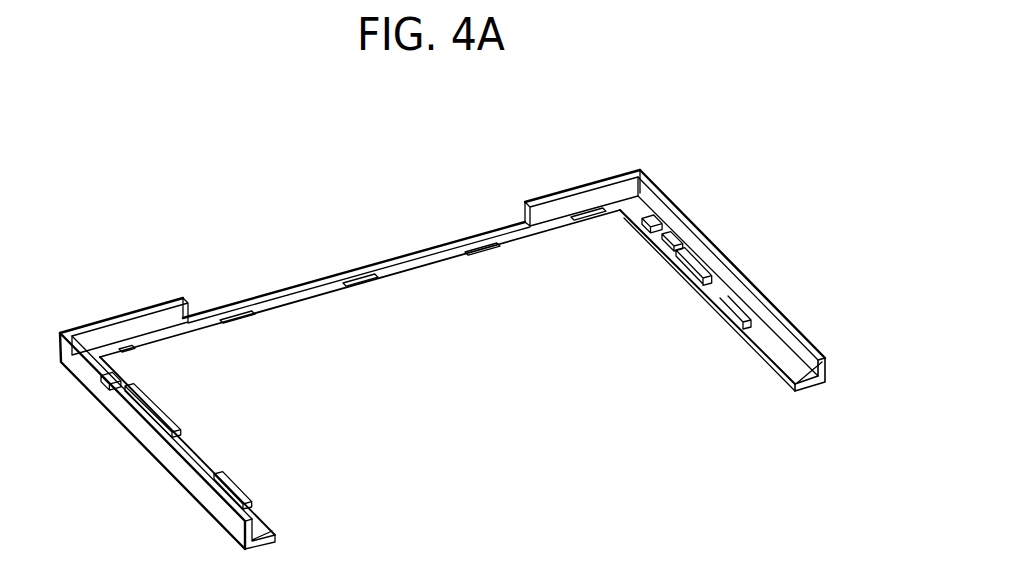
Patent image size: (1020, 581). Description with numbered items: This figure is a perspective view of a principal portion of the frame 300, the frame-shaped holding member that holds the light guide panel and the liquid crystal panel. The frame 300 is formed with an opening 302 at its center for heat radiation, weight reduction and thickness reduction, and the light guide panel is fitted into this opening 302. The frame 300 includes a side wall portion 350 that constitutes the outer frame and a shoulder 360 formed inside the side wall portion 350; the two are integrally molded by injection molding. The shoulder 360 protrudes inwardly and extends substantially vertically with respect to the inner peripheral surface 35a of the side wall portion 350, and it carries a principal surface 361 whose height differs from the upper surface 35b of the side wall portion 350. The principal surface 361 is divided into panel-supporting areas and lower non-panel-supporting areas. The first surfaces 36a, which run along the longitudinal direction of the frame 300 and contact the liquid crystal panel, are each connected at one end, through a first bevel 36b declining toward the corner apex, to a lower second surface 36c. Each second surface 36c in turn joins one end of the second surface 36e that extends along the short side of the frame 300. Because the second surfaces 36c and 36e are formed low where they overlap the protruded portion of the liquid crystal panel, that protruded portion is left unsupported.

The frame 300 is at (475, 308).
The opening 302 is at (762, 353).
The side wall portion 350 is at (766, 268).
The inner peripheral surface 35a is at (738, 283).
The upper surface 35b is at (767, 300).
The shoulder 360 is at (787, 342).
The principal surface 361 is at (802, 354).
The first surface 36a is at (245, 507).
The first bevel 36b is at (128, 382).
The second surface 36c is at (112, 378).
The second surface 36e is at (430, 252).